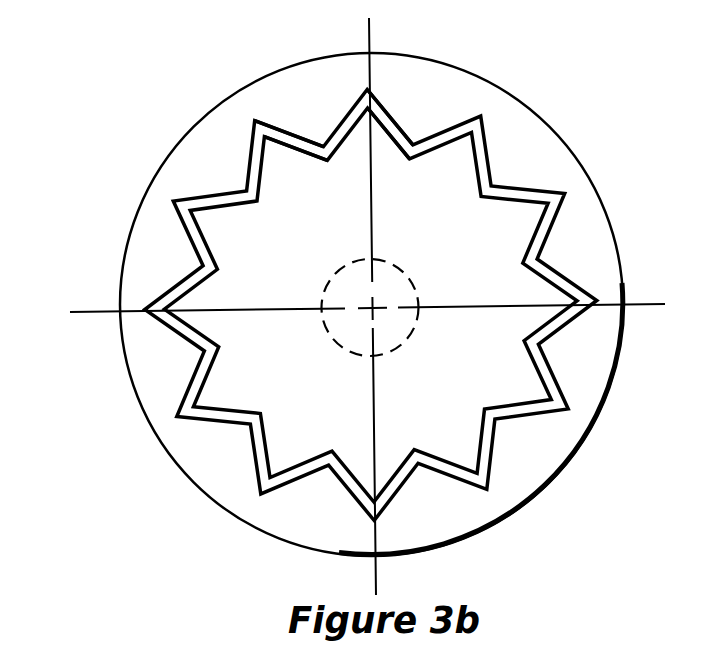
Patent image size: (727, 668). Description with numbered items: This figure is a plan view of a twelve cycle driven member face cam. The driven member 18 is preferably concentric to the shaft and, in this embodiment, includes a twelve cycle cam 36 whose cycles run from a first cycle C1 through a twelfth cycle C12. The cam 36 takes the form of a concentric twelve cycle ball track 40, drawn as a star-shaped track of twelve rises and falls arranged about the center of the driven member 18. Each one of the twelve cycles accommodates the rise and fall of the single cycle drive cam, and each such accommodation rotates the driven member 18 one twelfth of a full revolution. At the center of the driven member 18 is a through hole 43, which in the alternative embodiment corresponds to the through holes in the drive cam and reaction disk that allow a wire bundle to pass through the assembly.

The driven member 18 is at (610, 158).
The cam 36 is at (113, 228).
The ball track 40 is at (492, 155).
The through hole 43 is at (408, 275).
The first cycle C1 is at (285, 127).
The twelfth cycle C12 is at (398, 113).